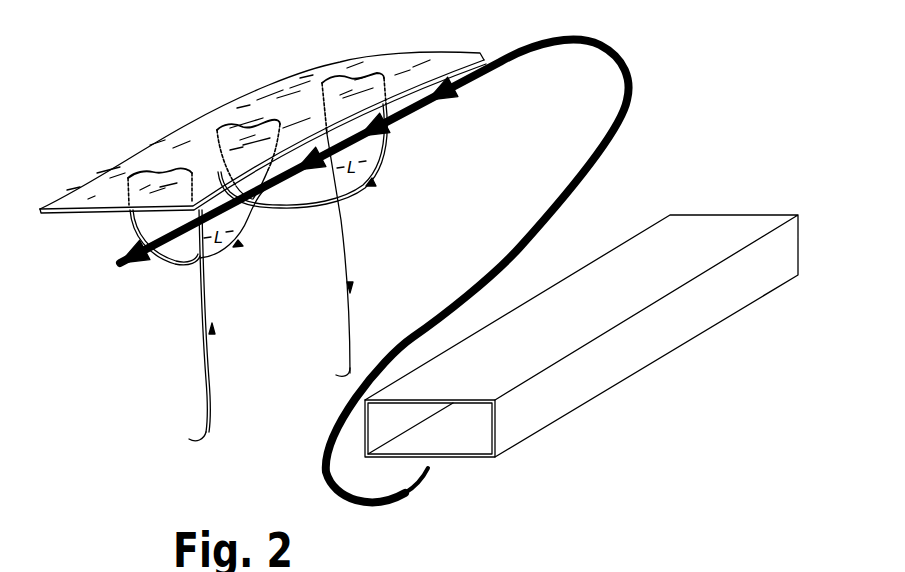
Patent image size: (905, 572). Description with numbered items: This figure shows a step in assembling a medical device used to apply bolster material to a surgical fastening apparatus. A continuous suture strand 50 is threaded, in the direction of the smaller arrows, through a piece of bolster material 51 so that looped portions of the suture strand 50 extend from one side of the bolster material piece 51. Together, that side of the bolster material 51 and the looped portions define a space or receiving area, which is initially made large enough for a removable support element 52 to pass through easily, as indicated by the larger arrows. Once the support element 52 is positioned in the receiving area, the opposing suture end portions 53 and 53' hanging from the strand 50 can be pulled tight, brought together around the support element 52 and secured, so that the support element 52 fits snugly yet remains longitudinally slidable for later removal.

The continuous suture strand 50 is at (340, 77).
The bolster material piece 51 is at (144, 153).
The removable support element 52 is at (642, 240).
The suture end portion 53 is at (178, 439).
The suture end portion 53' is at (323, 374).